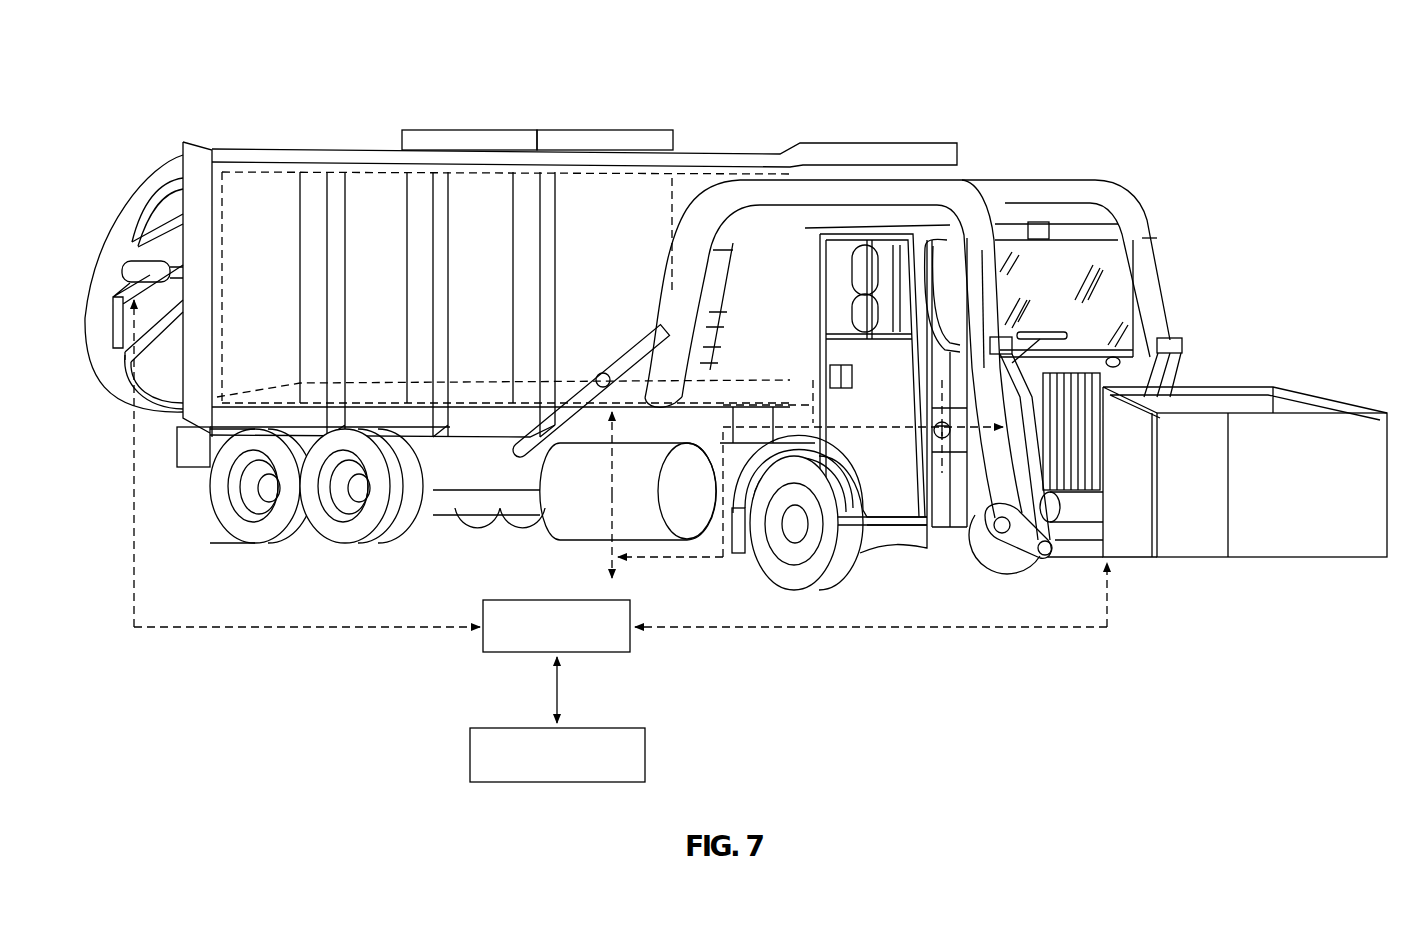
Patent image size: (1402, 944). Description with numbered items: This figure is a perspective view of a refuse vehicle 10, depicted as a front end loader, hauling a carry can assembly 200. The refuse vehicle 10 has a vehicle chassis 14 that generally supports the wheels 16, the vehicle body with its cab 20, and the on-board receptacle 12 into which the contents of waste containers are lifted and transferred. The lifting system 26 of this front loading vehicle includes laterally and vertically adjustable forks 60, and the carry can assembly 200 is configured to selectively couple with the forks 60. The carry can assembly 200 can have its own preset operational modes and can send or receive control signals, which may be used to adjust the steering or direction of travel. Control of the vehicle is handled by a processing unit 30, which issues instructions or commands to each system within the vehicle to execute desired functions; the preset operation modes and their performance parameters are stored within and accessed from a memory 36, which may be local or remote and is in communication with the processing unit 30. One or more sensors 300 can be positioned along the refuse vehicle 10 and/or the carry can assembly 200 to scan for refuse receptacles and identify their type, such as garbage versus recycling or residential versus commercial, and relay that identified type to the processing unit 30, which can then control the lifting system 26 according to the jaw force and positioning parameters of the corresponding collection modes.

The refuse vehicle 10 is at (1205, 320).
The on-board receptacle 12 is at (393, 98).
The vehicle chassis 14 is at (490, 500).
The wheels 16 is at (242, 528).
The cab 20 is at (880, 473).
The lifting system 26 is at (738, 108).
The processing unit 30 is at (537, 655).
The memory 36 is at (522, 783).
The forks 60 is at (1083, 556).
The carry can assembly 200 is at (1328, 545).
The sensors 300 is at (1040, 222).